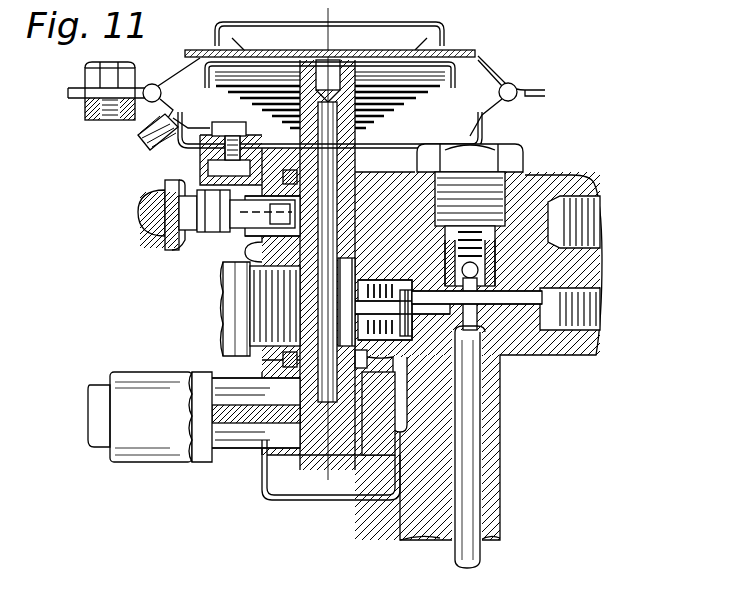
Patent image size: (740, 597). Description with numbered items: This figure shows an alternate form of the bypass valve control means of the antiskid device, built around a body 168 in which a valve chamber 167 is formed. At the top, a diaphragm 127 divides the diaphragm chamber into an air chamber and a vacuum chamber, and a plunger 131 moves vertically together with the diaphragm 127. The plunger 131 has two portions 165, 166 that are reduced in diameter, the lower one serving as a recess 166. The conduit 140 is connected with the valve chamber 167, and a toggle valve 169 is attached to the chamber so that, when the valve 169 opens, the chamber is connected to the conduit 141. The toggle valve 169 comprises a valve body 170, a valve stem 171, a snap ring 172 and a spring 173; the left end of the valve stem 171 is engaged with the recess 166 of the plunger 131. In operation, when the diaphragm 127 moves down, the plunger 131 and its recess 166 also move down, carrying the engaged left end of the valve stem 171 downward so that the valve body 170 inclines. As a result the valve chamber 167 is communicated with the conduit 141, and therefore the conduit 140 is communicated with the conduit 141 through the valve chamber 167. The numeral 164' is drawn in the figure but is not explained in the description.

The diaphragm 127 is at (440, 85).
The plunger 131 is at (400, 142).
The conduit 140 is at (580, 190).
The conduit 141 is at (470, 352).
The valve stem pin 164' is at (559, 412).
The reduced-diameter portion 165 is at (245, 232).
The reduced-diameter portion (recess) 166 is at (223, 325).
The valve chamber 167 is at (300, 378).
The body 168 is at (523, 160).
The toggle valve 169 is at (372, 345).
The valve body 170 is at (400, 345).
The valve stem 171 is at (330, 380).
The snap ring 172 is at (240, 268).
The spring 173 is at (407, 420).